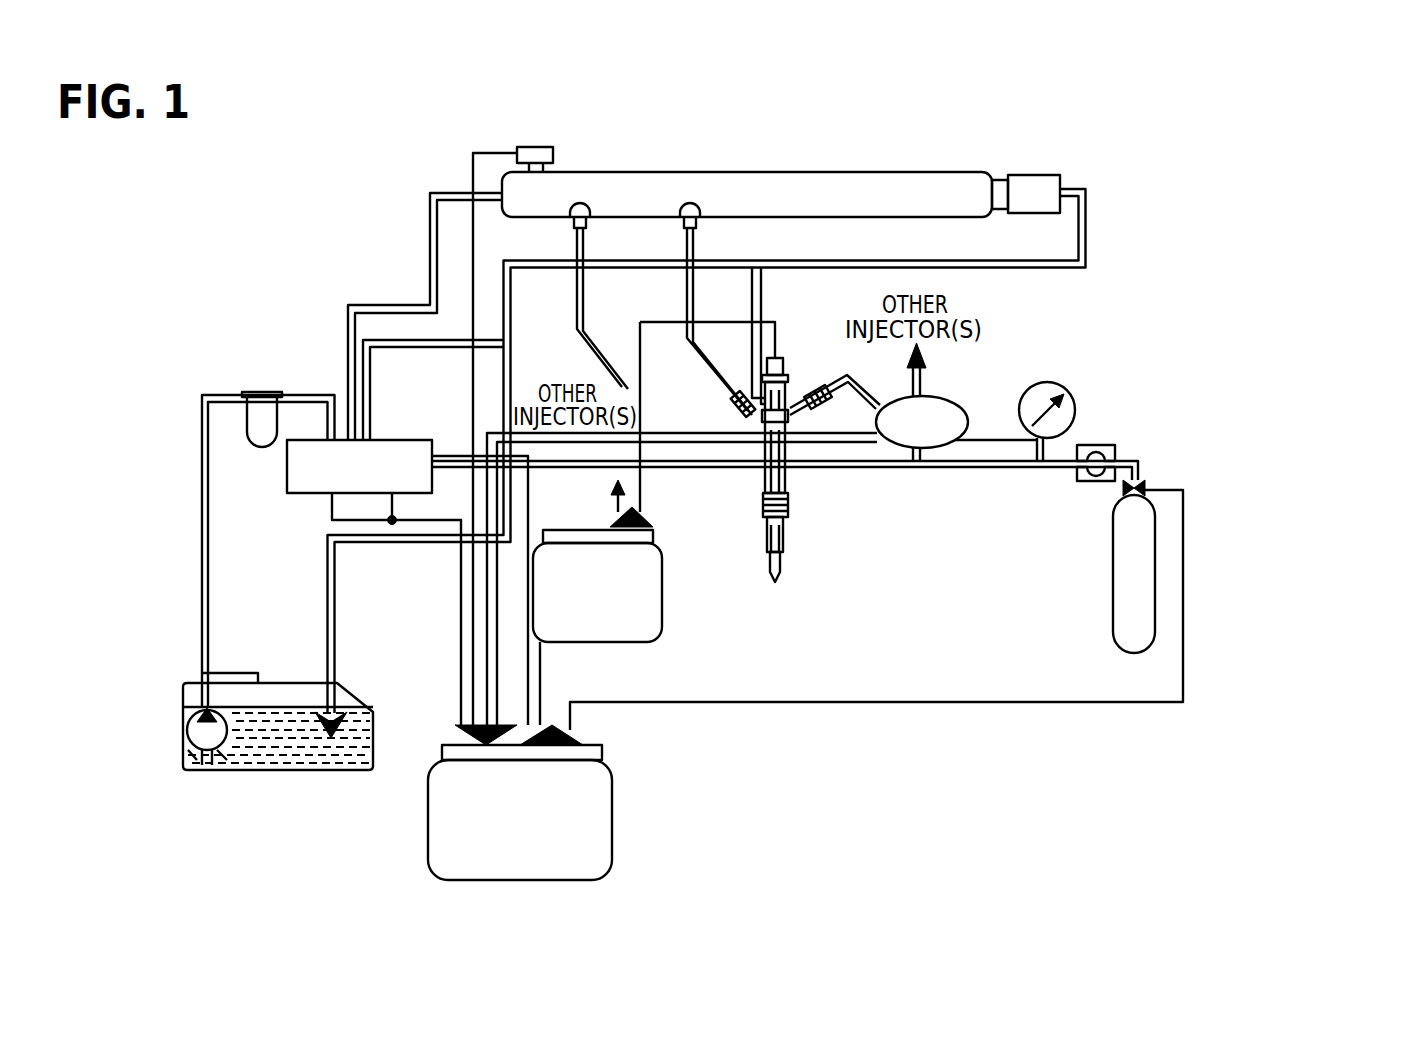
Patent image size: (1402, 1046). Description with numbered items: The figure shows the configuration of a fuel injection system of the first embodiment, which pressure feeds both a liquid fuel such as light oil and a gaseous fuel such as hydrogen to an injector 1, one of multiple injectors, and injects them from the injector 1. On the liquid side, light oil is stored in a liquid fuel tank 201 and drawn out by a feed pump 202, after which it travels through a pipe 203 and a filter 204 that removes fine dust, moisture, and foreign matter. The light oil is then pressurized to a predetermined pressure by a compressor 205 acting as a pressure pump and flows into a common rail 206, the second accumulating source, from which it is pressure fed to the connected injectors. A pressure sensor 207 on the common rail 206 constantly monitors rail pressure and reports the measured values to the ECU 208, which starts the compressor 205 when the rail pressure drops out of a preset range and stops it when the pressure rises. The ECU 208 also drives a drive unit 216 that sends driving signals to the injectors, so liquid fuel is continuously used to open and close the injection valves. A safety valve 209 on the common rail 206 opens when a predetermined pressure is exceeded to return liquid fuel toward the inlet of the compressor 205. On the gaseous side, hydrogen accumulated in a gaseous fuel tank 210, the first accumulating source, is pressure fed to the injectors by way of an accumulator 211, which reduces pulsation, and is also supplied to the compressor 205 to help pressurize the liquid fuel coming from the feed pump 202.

The injector 1 is at (812, 517).
The liquid fuel tank 201 is at (270, 750).
The feed pump 202 is at (190, 724).
The pipe 203 is at (205, 548).
The filter 204 is at (263, 413).
The compressor 205 is at (328, 437).
The common rail 206 is at (677, 190).
The pressure sensor 207 is at (536, 150).
The ECU 208 is at (612, 807).
The safety valve 209 is at (1028, 178).
The gaseous fuel tank 210 is at (1142, 562).
The accumulator 211 is at (953, 400).
The drive unit 216 is at (662, 573).